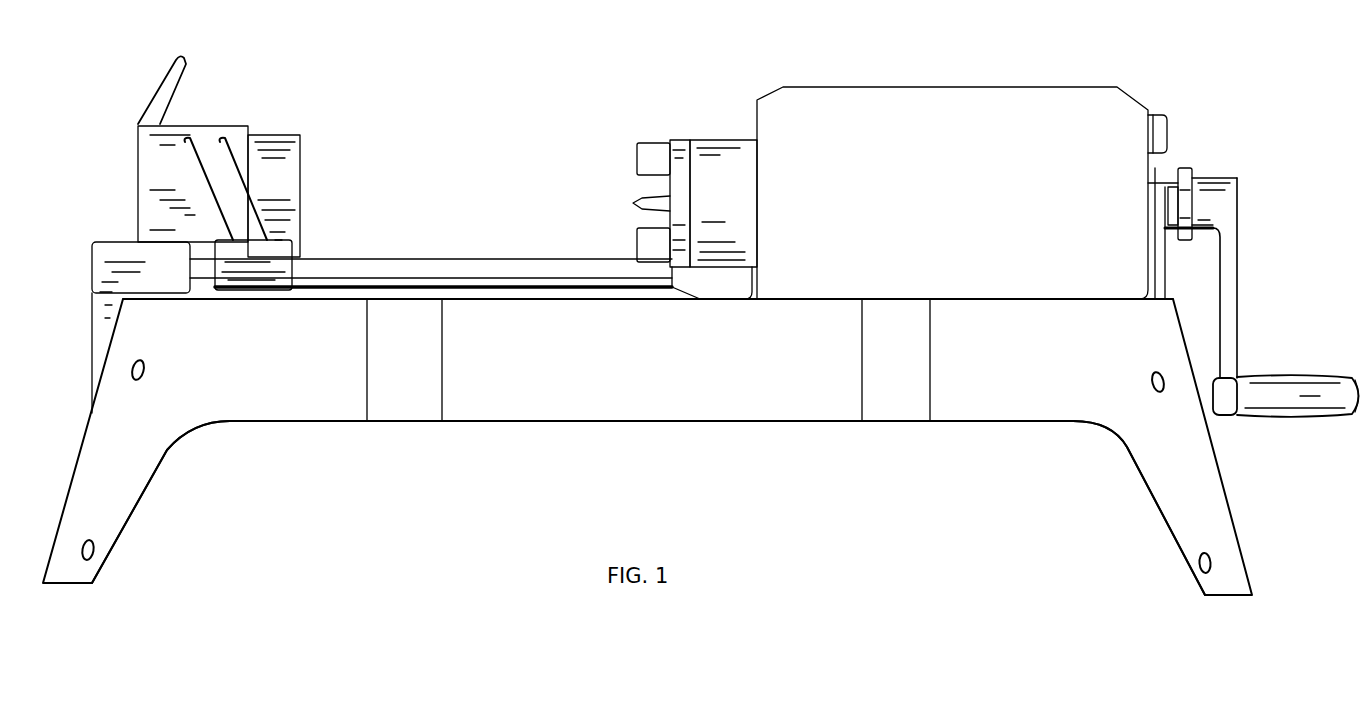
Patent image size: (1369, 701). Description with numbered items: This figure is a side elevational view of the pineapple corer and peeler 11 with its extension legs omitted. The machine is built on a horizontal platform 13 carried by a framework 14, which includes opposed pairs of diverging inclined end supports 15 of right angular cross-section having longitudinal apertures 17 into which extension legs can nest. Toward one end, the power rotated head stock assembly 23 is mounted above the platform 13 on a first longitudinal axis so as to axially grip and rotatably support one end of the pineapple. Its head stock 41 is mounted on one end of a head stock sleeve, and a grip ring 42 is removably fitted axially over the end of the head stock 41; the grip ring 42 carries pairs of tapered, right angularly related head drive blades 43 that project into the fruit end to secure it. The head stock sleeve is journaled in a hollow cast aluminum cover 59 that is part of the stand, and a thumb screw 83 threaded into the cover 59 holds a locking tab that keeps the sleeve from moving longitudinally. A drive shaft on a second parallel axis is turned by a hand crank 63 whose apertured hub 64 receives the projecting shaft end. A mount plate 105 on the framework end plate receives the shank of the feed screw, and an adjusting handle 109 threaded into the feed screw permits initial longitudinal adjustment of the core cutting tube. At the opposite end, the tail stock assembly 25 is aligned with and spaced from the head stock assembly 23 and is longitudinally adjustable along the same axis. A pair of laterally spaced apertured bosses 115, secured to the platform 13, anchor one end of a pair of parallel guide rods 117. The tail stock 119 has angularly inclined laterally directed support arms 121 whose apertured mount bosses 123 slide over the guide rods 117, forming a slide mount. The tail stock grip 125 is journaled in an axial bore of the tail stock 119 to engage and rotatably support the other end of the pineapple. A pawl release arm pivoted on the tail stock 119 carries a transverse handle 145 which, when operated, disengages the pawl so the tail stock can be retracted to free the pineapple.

The pineapple corer and peeler 11 is at (728, 130).
The horizontal platform 13 is at (495, 300).
The framework 14 is at (88, 428).
The end supports 15 is at (147, 470).
The longitudinal apertures 17 is at (130, 376).
The head stock assembly 23 is at (666, 136).
The tail stock assembly 25 is at (295, 122).
The head stock 41 is at (738, 182).
The grip ring 42 is at (680, 145).
The head drive blades 43 is at (633, 203).
The cover 59 is at (900, 62).
The hand crank 63 is at (1232, 306).
The apertured hub 64 is at (1222, 180).
The thumb screw 83 is at (1162, 131).
The mount plate 105 is at (1162, 272).
The adjusting handle 109 is at (1185, 222).
The apertured bosses 115 is at (110, 248).
The guide rods 117 is at (460, 241).
The tail stock 119 is at (197, 127).
The support arms 121 is at (237, 200).
The mount bosses 123 is at (285, 252).
The tail stock grip 125 is at (293, 150).
The handle 145 is at (157, 91).